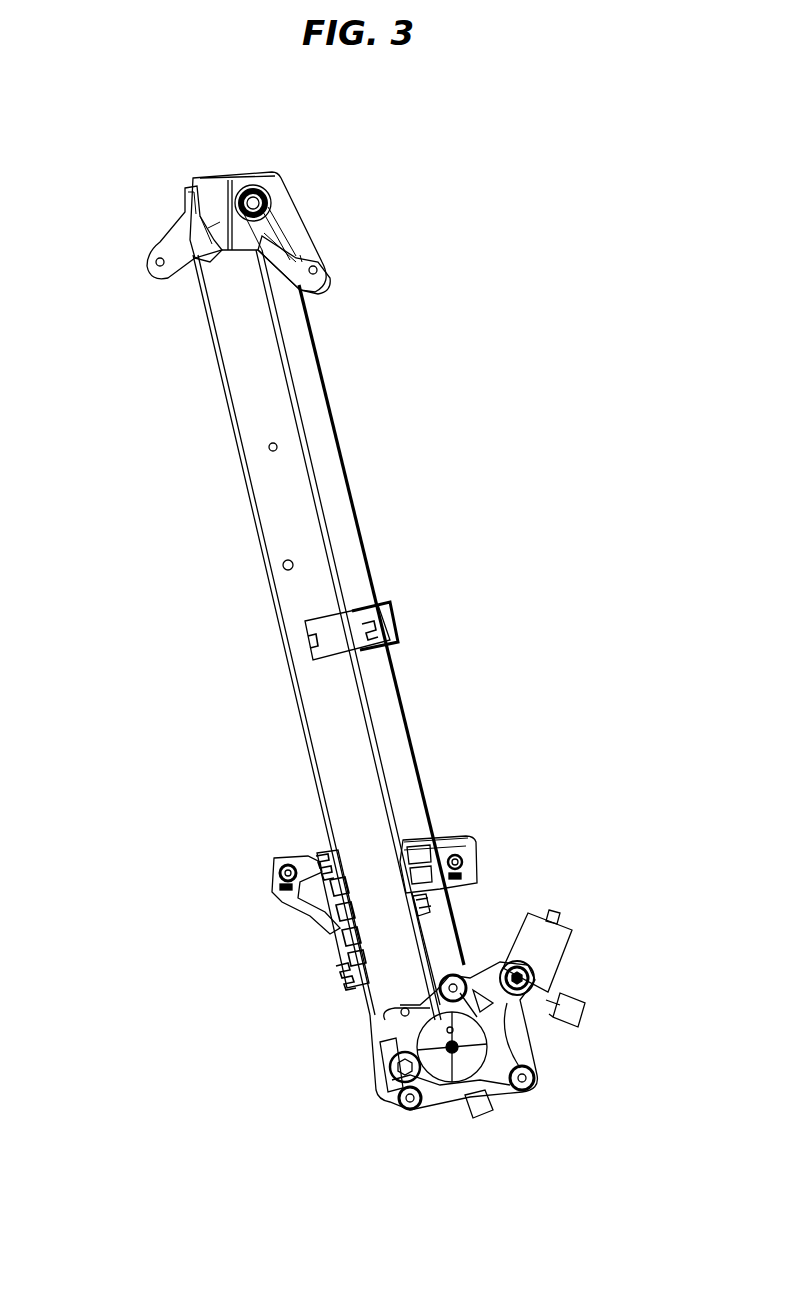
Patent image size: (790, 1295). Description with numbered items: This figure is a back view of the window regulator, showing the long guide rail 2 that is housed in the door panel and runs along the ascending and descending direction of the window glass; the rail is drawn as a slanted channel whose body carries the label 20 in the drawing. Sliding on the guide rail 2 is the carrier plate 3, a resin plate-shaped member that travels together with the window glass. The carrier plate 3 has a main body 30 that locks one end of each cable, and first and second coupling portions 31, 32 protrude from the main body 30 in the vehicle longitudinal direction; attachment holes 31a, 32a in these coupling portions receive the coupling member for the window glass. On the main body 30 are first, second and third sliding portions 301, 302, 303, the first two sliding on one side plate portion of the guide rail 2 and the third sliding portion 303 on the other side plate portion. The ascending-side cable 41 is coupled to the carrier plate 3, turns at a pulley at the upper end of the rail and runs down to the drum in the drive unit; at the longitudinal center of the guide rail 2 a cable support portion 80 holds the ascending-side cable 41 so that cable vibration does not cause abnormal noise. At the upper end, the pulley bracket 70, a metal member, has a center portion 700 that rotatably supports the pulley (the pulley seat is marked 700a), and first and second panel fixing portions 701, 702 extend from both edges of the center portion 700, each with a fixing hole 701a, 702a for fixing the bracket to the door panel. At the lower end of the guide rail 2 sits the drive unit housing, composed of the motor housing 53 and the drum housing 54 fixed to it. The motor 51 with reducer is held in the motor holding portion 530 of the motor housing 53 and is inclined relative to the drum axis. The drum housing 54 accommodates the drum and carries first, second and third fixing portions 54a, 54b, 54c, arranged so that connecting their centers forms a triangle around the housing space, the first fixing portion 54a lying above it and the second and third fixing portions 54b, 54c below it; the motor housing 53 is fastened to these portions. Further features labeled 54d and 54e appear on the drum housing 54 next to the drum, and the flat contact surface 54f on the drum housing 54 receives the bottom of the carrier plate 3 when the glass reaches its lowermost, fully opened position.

The guide rail 2 is at (200, 405).
The carrier plate 3 is at (272, 843).
The guide rail 20 is at (258, 446).
The main body 30 is at (325, 933).
The first sliding portion 301 is at (322, 862).
The second sliding portion 302 is at (345, 985).
The third sliding portion 303 is at (428, 906).
The first coupling portion 31 is at (458, 836).
The attachment hole 31a is at (466, 860).
The second coupling portion 32 is at (272, 868).
The attachment hole 32a is at (283, 877).
The ascending-side cable 41 is at (318, 362).
The motor 51 is at (560, 922).
The motor housing 53 is at (598, 1010).
The motor holding portion 530 is at (552, 1035).
The drum housing 54 is at (528, 1050).
The first fixing portion 54a is at (452, 975).
The second fixing portion 54b is at (412, 1112).
The third fixing portion 54c is at (530, 1090).
The roller 54d is at (522, 976).
The mounting bolt 54e is at (380, 1102).
The contact surface 54f is at (372, 1032).
The pulley bracket 70 is at (292, 186).
The center portion 700 is at (210, 180).
The pulley bushing 700a is at (256, 186).
The first panel fixing portion 701 is at (312, 248).
The fixing hole 701a is at (320, 272).
The second panel fixing portion 702 is at (142, 256).
The fixing hole 702a is at (152, 270).
The cable support portion 80 is at (383, 622).